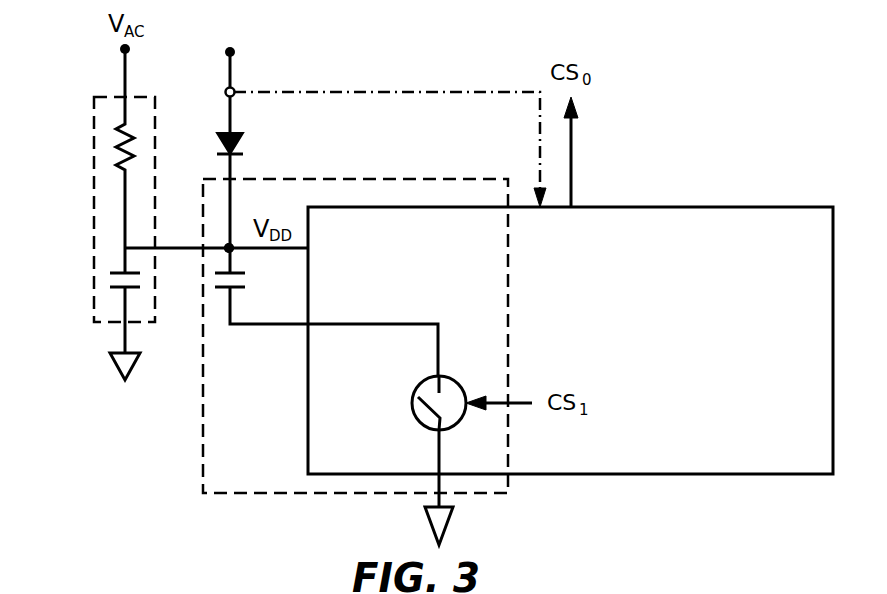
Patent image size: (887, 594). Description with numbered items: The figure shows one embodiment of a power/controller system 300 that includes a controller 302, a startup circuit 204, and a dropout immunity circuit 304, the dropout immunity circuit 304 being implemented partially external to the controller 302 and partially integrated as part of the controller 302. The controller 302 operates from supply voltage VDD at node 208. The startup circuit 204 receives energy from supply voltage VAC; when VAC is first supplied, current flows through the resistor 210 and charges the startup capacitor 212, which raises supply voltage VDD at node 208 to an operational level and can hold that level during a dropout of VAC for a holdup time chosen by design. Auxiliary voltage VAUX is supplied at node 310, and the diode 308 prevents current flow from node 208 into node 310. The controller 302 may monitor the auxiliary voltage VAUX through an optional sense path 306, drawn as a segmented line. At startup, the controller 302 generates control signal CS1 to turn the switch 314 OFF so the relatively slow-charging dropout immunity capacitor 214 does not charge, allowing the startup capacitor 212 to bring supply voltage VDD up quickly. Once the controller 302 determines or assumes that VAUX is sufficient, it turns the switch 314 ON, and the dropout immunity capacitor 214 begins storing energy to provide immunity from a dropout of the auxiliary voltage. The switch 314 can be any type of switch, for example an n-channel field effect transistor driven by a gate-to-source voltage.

The startup circuit 204 is at (93, 197).
The node 208 is at (231, 246).
The resistor 210 is at (118, 133).
The startup capacitor 212 is at (113, 289).
The dropout immunity capacitor 214 is at (220, 289).
The power/controller system 300 is at (641, 146).
The controller 302 is at (677, 206).
The dropout immunity circuit 304 is at (378, 177).
The sense path 306 is at (352, 89).
The diode 308 is at (244, 141).
The node 310 is at (229, 51).
The switch 314 is at (439, 375).